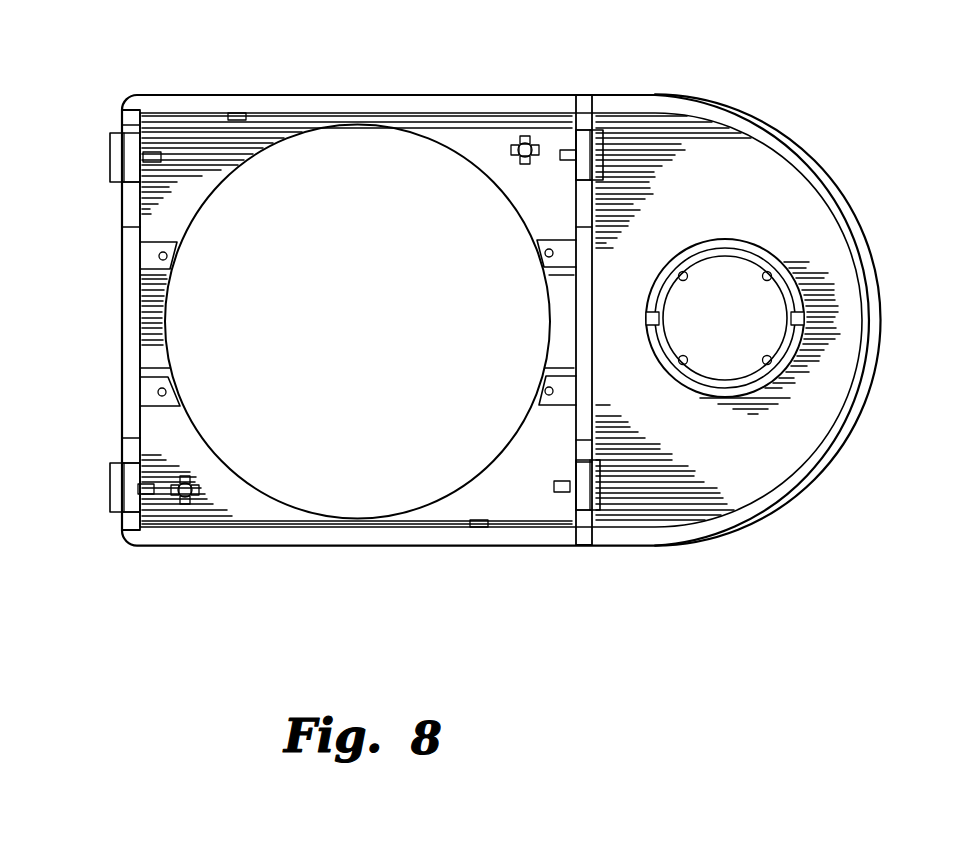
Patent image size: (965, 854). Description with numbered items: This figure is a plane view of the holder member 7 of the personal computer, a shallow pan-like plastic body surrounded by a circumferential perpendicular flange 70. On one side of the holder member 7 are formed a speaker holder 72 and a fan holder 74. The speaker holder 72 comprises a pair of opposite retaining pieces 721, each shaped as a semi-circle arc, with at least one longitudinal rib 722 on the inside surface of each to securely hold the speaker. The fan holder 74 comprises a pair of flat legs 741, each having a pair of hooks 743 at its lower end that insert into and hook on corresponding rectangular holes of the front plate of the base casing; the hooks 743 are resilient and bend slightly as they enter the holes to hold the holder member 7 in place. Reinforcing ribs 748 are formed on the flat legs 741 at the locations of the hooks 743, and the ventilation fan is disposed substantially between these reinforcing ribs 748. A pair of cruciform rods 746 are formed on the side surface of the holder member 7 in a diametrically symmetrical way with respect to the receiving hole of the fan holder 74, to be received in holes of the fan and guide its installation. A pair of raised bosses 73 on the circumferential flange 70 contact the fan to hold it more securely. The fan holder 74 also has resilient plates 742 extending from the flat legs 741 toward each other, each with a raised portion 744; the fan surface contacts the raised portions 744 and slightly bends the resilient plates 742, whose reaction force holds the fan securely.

The holder member 7 is at (615, 86).
The circumferential perpendicular flange 70 is at (405, 110).
The speaker holder 72 is at (768, 483).
The retaining pieces 721 is at (745, 245).
The longitudinal rib 722 is at (763, 278).
The raised bosses 73 is at (240, 115).
The fan holder 74 is at (236, 512).
The flat legs 741 is at (130, 308).
The resilient plates 742 is at (180, 392).
The hooks 743 is at (133, 165).
The raised portion 744 is at (170, 386).
The cruciform rods 746 is at (518, 158).
The reinforcing ribs 748 is at (162, 158).